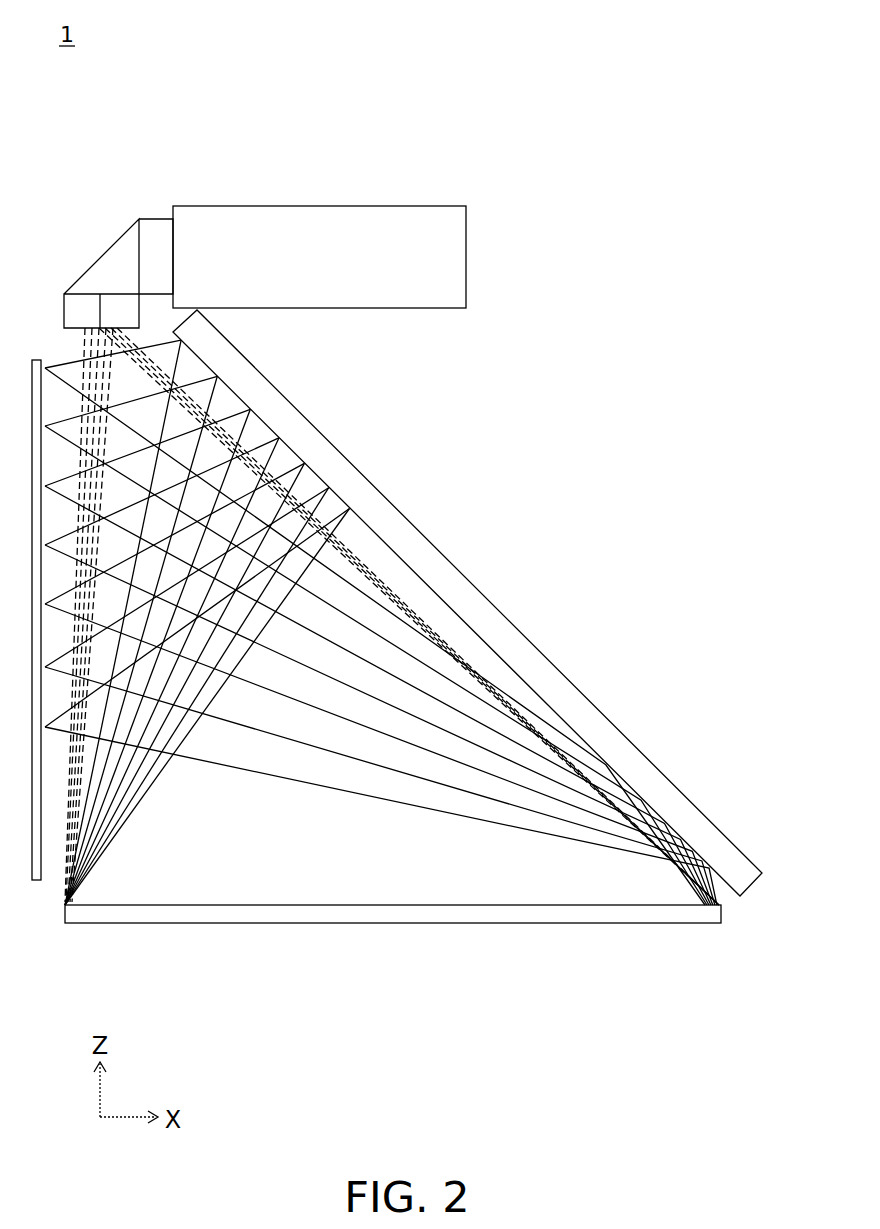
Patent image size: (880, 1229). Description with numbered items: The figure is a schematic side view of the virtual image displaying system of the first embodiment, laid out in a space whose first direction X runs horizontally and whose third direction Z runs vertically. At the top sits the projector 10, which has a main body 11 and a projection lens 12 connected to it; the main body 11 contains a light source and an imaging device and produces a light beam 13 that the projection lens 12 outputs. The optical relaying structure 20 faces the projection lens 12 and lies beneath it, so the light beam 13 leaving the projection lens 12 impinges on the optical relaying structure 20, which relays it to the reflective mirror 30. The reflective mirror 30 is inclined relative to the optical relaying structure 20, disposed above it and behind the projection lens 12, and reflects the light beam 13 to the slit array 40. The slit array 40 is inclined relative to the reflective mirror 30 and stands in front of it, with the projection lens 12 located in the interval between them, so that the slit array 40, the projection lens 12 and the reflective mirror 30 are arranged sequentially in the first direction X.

The projector 10 is at (265, 206).
The main body 11 is at (264, 226).
The projection lens 12 is at (118, 235).
The light beam 13 is at (233, 447).
The optical relaying structure 20 is at (452, 913).
The reflective mirror 30 is at (622, 746).
The slit array 40 is at (35, 884).